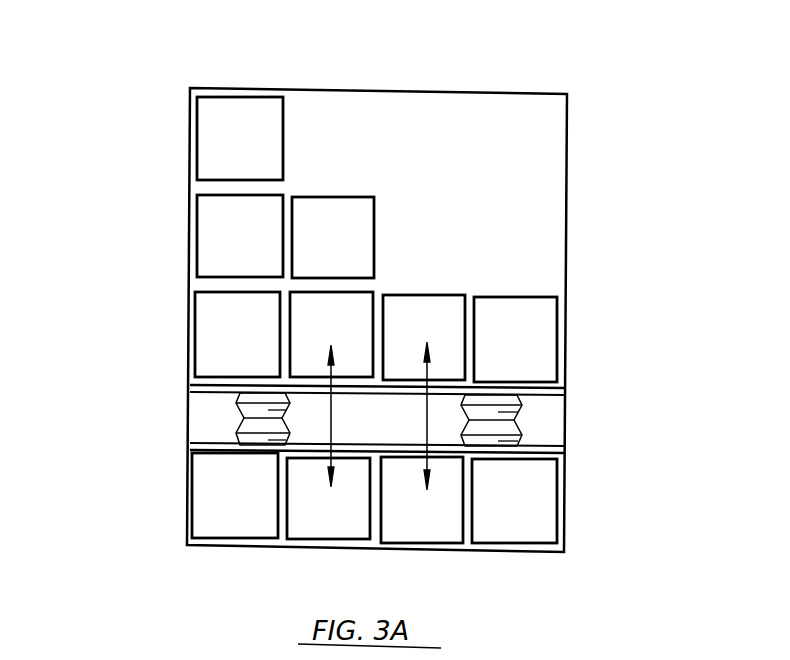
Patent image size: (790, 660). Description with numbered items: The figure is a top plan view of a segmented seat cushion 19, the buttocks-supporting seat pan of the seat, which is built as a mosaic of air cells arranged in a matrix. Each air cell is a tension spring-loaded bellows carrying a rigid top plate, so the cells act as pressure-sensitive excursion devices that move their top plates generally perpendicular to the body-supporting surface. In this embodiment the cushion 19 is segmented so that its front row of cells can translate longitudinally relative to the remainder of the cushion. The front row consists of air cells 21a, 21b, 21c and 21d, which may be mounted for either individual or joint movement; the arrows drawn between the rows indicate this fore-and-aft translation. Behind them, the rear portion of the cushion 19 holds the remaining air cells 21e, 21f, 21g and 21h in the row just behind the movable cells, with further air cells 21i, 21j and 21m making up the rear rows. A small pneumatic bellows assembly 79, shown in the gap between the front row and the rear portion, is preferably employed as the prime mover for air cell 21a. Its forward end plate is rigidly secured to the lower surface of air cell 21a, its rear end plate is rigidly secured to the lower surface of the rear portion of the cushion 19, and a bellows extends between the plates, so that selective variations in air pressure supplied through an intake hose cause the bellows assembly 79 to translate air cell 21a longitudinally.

The seat cushion 19 is at (533, 155).
The air cell 21a is at (203, 498).
The air cell 21b is at (330, 530).
The air cell 21c is at (440, 532).
The air cell 21d is at (538, 497).
The air cell 21e is at (210, 325).
The air cell 21f is at (355, 308).
The air cell 21g is at (440, 312).
The air cell 21h is at (547, 322).
The air cell 21i is at (205, 233).
The air cell 21j is at (332, 210).
The air cell 21m is at (207, 123).
The pneumatic bellows assembly 79 is at (237, 413).